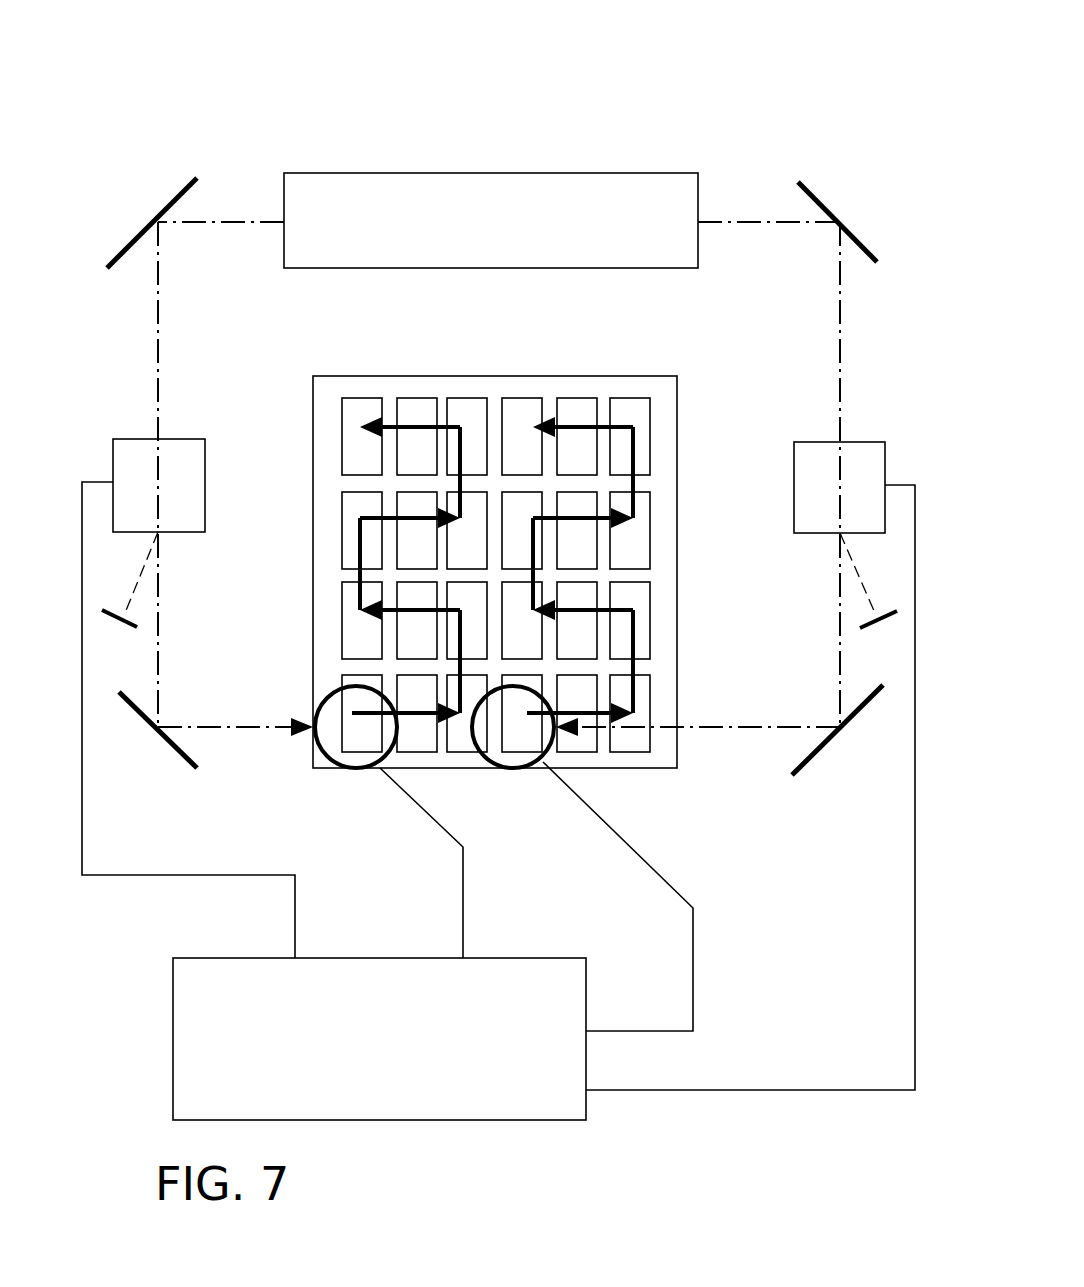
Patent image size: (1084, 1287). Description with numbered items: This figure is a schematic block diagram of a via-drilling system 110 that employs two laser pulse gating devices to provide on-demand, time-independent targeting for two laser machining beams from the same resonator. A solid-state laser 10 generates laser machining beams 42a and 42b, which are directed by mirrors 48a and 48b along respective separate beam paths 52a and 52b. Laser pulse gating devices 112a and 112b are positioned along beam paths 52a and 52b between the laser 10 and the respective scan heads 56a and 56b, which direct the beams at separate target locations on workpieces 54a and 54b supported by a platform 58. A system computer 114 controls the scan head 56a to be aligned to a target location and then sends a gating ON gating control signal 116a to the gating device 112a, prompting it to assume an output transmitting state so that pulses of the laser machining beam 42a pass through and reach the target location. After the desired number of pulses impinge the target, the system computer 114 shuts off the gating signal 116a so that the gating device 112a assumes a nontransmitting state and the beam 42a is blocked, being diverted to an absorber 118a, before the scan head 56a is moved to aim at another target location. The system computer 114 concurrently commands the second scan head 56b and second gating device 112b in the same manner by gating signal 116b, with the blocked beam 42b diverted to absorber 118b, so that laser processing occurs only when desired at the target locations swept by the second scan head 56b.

The via-drilling system 110 is at (525, 95).
The laser 10 is at (580, 173).
The beam path 52a is at (262, 220).
The beam path 52b is at (740, 220).
The mirror 48a is at (170, 202).
The mirror 48b is at (857, 223).
The laser machining beam 42a is at (157, 387).
The laser machining beam 42b is at (840, 377).
The laser pulse gating device 112a is at (188, 439).
The laser pulse gating device 112b is at (808, 442).
The absorber 118a is at (125, 627).
The absorber 118b is at (873, 625).
The platform 58 is at (662, 376).
The workpiece 54a is at (367, 398).
The workpiece 54b is at (523, 398).
The scan head 56a is at (355, 768).
The scan head 56b is at (513, 768).
The system computer 114 is at (372, 958).
The gating control signal 116a is at (127, 875).
The gating control signal 116b is at (915, 923).